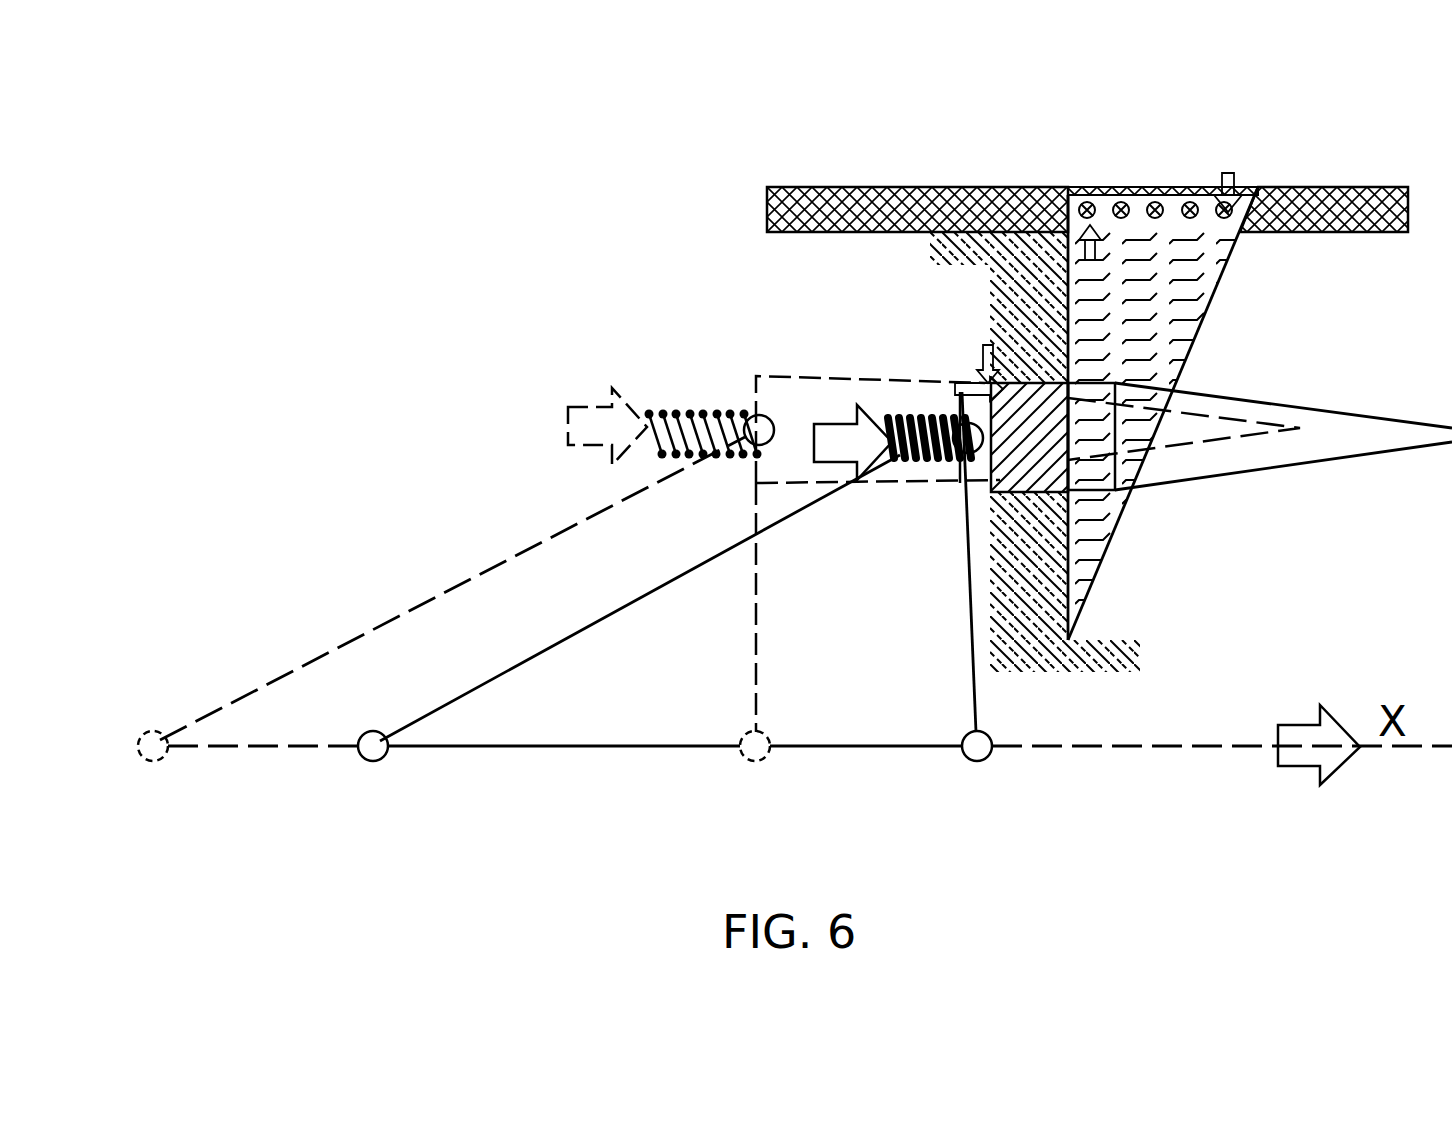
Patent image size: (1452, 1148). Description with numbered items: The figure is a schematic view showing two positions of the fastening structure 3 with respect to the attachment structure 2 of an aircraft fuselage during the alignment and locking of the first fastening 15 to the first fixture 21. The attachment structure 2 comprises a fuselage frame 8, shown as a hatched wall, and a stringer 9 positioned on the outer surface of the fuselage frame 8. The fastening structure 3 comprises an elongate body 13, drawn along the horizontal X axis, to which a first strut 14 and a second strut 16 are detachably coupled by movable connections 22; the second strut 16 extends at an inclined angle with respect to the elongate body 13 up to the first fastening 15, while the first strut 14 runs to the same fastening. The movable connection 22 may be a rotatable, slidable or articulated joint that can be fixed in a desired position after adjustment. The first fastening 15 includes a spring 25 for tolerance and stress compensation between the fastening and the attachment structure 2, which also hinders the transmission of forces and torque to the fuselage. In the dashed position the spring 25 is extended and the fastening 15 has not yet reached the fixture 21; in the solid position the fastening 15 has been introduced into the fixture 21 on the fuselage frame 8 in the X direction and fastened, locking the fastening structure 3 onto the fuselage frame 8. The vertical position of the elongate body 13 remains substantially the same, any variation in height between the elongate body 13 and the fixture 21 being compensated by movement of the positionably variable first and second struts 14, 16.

The attachment structure 2 is at (1162, 133).
The fastening structure 3 is at (606, 528).
The fuselage frame 8 is at (1010, 188).
The stringer 9 is at (965, 188).
The elongate body 13 is at (285, 748).
The first strut 14 is at (756, 678).
The first fastening 15 is at (1250, 398).
The second strut 16 is at (386, 625).
The first fixture 21 is at (1062, 497).
The movable connection 22 is at (156, 761).
The spring 25 is at (910, 483).